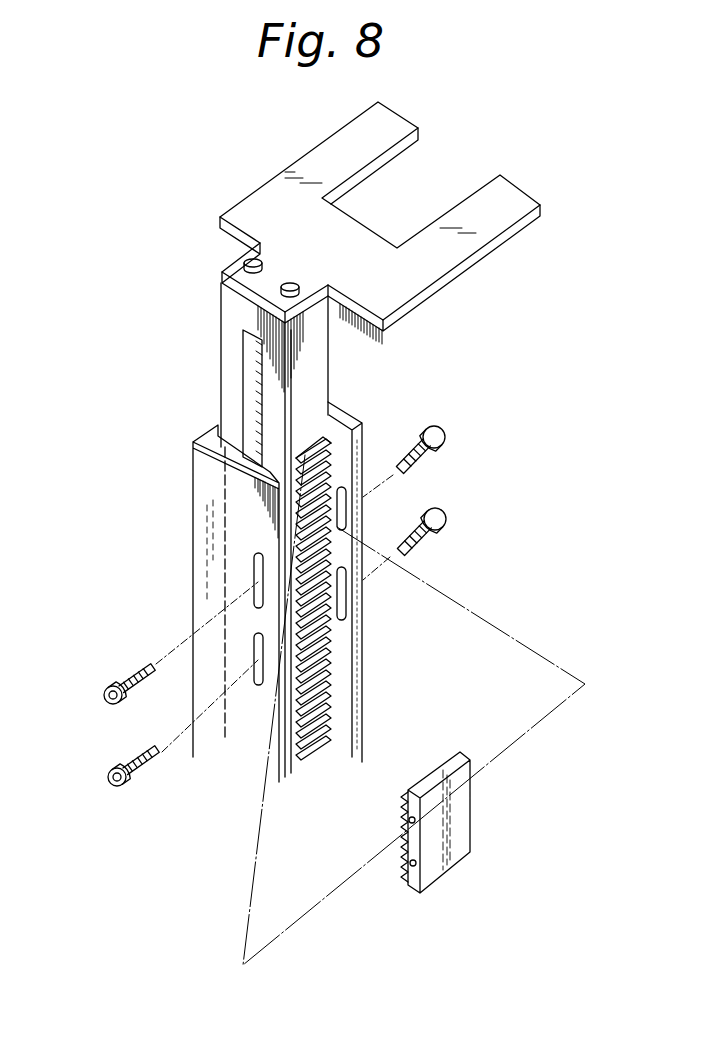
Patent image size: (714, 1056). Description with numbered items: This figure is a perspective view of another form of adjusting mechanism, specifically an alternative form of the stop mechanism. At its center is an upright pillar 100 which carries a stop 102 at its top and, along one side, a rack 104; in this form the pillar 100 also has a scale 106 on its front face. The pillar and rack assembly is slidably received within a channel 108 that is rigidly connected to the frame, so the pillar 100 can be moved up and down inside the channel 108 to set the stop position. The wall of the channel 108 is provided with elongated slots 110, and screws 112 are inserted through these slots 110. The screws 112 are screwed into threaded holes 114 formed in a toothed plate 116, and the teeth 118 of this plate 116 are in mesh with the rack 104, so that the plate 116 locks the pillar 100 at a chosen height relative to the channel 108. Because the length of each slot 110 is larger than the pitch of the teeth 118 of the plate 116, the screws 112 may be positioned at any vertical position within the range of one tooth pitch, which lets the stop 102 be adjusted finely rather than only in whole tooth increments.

The pillar 100 is at (322, 369).
The stop 102 is at (508, 215).
The rack 104 is at (327, 487).
The scale 106 is at (252, 382).
The channel 108 is at (198, 530).
The slots 110 is at (257, 650).
The screws 112 is at (442, 520).
The threaded holes 114 is at (410, 820).
The toothed plate 116 is at (467, 838).
The teeth 118 is at (401, 862).